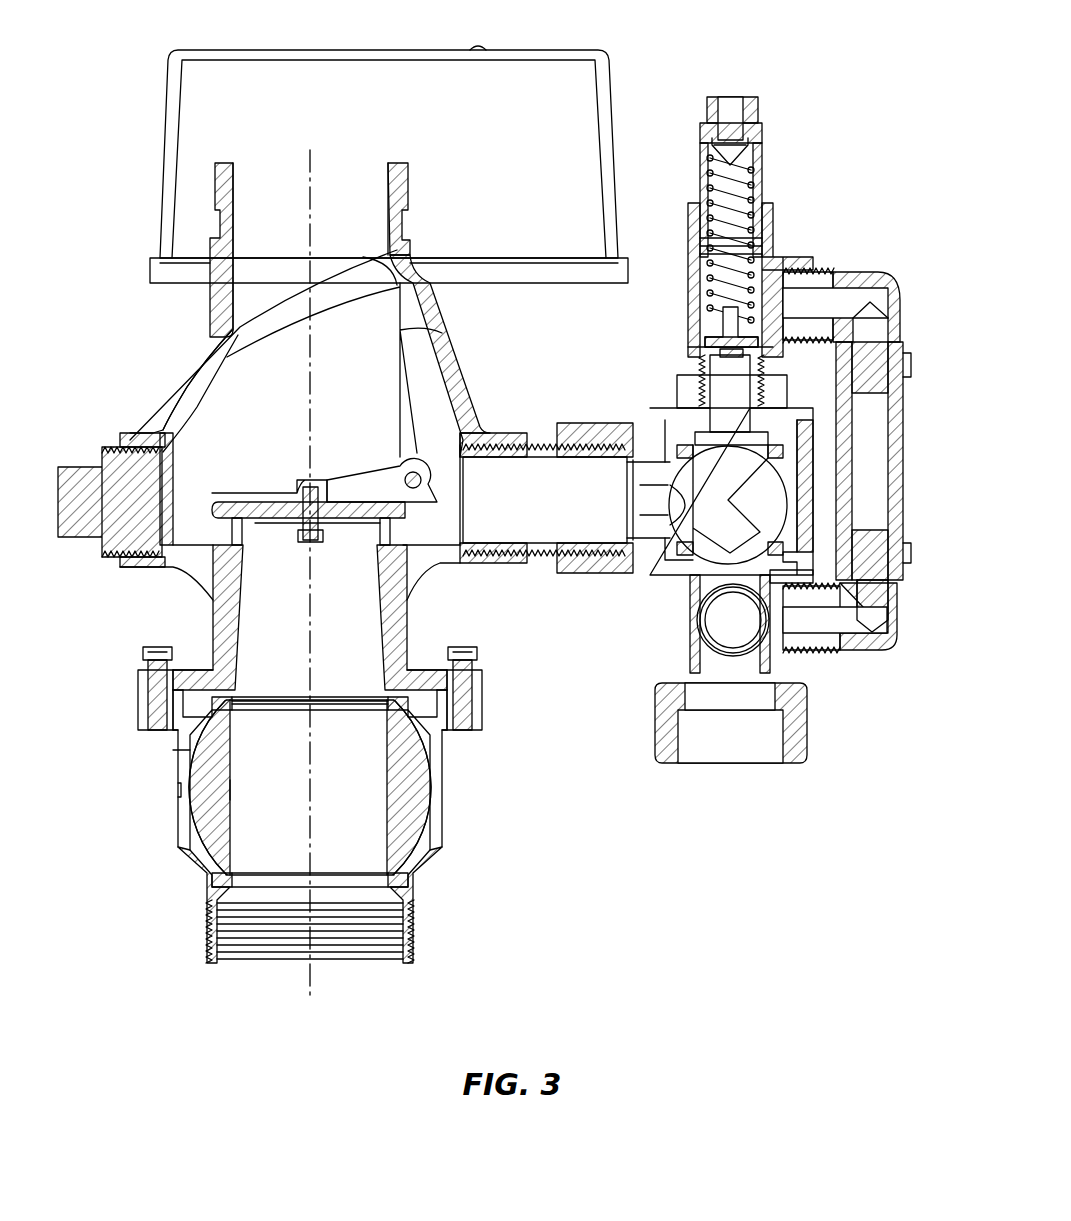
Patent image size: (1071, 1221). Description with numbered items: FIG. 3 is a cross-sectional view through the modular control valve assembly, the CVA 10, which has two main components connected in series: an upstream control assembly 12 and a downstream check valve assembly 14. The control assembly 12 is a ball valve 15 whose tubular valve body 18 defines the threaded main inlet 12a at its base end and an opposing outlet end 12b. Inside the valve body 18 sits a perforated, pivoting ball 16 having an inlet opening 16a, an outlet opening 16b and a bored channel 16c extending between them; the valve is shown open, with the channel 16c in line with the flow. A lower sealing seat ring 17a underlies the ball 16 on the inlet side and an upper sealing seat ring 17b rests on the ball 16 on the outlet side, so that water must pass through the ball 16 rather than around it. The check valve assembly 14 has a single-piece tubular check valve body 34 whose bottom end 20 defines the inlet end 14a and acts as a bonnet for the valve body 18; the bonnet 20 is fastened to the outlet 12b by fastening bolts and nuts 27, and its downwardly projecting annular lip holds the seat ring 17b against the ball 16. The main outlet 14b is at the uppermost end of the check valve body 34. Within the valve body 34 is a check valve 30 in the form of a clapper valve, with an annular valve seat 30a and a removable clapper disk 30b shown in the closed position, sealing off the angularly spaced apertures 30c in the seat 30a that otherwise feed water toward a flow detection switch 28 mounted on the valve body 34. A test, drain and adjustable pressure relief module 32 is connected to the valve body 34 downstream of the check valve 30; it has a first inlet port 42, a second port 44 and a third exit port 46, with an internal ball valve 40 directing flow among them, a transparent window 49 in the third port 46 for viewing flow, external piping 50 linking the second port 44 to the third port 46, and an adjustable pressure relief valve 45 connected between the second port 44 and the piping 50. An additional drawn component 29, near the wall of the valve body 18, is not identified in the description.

The control valve assembly 10 is at (802, 38).
The control assembly 12 is at (172, 815).
The main inlet 12a is at (210, 960).
The outlet end 12b is at (483, 698).
The check valve assembly 14 is at (471, 333).
The inlet end 14a is at (335, 680).
The main outlet 14b is at (222, 160).
The ball valve 15 is at (413, 780).
The ball 16 is at (420, 800).
The inlet opening 16a is at (345, 880).
The outlet opening 16b is at (280, 703).
The channel 16c is at (360, 808).
The sealing seat ring 17a is at (215, 880).
The sealing seat ring 17b is at (210, 703).
The valve body 18 is at (180, 772).
The bonnet 20 is at (415, 655).
The fastening bolts/nuts 27 is at (142, 655).
The flow detection switch 28 is at (271, 45).
The gasket 29 is at (178, 752).
The check valve 30 is at (262, 480).
The valve seat 30a is at (223, 525).
The clapper disk 30b is at (357, 487).
The apertures 30c is at (247, 547).
The test, drain and adjustable pressure relief module 32 is at (906, 315).
The check valve body 34 is at (188, 372).
The internal flow valve 40 is at (720, 514).
The first port 42 is at (598, 418).
The second port 44 is at (668, 392).
The adjustable pressure relief valve 45 is at (766, 174).
The third port 46 is at (812, 730).
The transparent window 49 is at (716, 622).
The external piping 50 is at (906, 432).